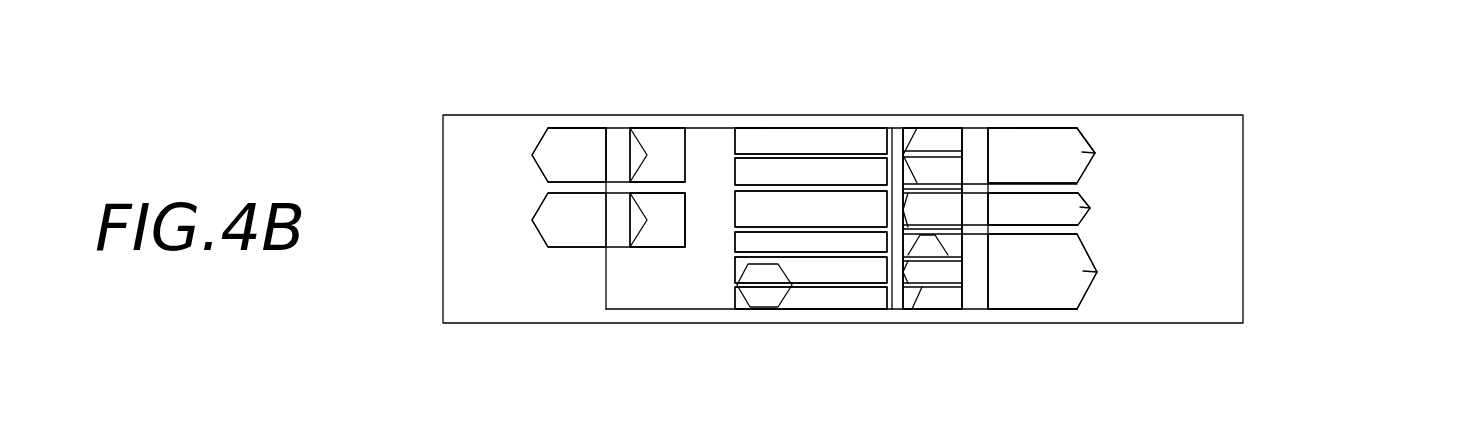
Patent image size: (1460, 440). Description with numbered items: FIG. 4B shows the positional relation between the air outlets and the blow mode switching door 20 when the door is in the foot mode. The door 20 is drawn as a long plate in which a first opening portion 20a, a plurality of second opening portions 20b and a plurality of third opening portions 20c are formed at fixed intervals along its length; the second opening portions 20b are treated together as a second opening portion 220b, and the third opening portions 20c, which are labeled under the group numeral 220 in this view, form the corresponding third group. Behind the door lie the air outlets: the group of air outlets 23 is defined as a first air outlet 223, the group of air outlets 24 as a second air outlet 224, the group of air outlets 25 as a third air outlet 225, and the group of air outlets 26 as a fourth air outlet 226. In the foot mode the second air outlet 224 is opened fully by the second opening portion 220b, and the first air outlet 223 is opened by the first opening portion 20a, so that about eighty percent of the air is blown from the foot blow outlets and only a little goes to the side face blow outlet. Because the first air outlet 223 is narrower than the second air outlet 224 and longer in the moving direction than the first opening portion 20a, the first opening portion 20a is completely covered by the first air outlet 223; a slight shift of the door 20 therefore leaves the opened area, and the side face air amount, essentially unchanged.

The blow mode switching door 20 is at (488, 298).
The first opening portion 20a is at (760, 298).
The second opening portion 20b is at (1095, 153).
The third opening portion 20c is at (565, 147).
The air outlet 23 is at (815, 272).
The air outlet 24 is at (918, 270).
The air outlet 25 is at (763, 140).
The air outlet 26 is at (665, 148).
The blow mode switching door 220 is at (648, 70).
The second opening portion 220b is at (1348, 125).
The first air outlet 223 is at (882, 360).
The second air outlet 224 is at (1075, 390).
The third air outlet 225 is at (900, 42).
The fourth air outlet 226 is at (763, 70).